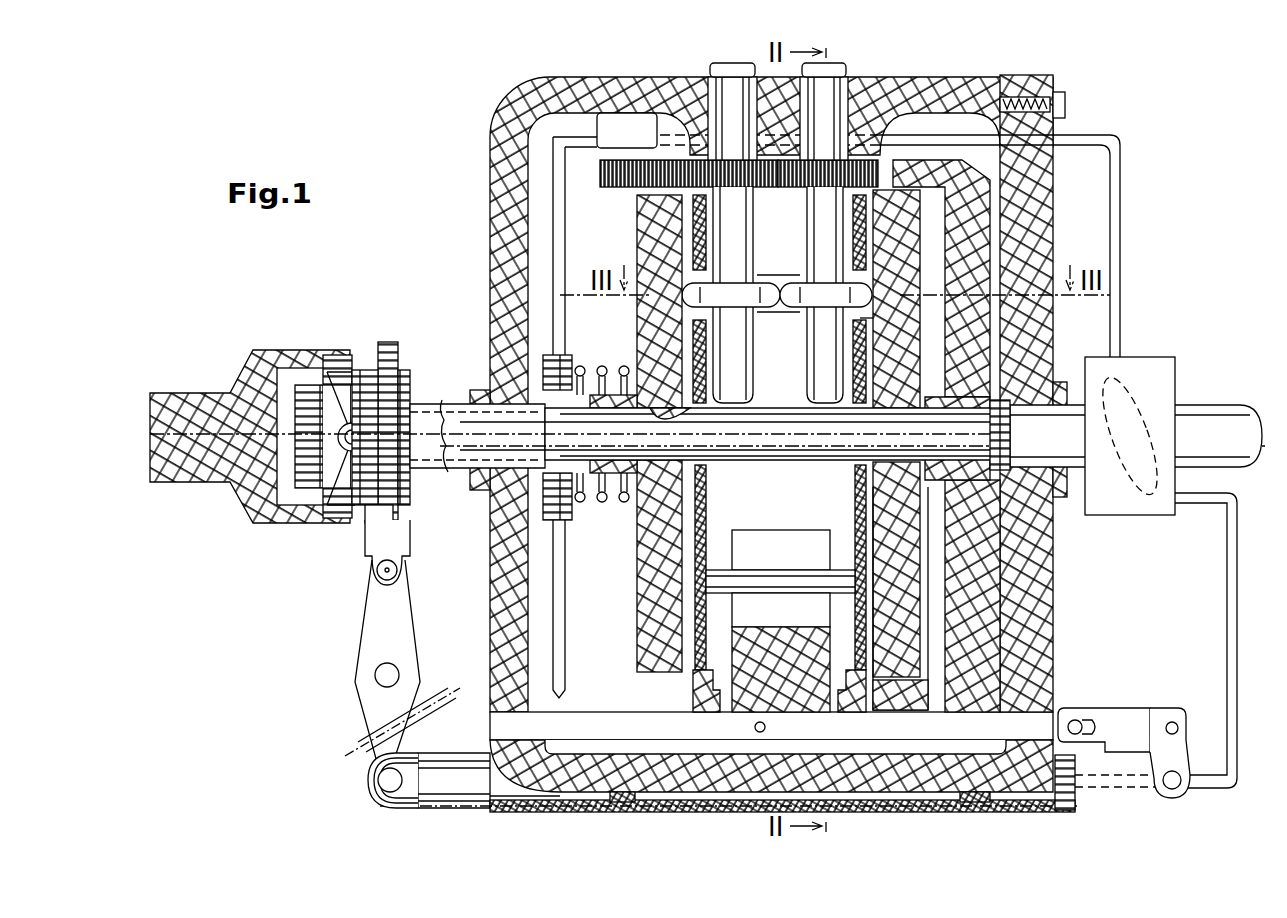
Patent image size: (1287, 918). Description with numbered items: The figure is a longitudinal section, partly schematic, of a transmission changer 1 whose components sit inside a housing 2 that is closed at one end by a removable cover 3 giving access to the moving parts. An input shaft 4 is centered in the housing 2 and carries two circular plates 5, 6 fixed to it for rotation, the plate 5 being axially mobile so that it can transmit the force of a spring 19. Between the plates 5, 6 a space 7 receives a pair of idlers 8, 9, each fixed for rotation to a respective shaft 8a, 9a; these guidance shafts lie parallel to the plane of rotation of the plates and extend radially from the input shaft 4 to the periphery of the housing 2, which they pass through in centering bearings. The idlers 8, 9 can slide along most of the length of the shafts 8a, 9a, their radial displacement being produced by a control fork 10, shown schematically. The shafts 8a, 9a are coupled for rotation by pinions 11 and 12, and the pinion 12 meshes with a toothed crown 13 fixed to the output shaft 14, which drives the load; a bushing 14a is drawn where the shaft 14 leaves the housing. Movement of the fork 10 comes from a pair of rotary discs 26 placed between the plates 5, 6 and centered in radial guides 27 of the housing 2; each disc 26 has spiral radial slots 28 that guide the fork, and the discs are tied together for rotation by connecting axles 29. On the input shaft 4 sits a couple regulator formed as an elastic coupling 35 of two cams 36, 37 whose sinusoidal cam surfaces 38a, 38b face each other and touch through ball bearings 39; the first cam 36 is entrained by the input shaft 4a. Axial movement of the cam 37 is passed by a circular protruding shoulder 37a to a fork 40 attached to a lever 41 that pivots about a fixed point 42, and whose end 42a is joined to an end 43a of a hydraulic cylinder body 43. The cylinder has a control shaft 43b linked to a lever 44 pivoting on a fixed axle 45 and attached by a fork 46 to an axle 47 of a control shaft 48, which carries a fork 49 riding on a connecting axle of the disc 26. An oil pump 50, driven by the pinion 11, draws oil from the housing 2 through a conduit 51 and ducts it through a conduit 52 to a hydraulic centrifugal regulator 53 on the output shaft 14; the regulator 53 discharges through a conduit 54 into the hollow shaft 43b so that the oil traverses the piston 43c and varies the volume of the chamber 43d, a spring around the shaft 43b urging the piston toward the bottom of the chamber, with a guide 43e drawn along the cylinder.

The transmission changer 1 is at (1096, 587).
The housing 2 is at (490, 194).
The removable cover 3 is at (1048, 205).
The input shaft 4 is at (456, 416).
The input shaft 4a is at (186, 394).
The circular plate 5 is at (637, 576).
The circular plate 6 is at (880, 532).
The space 7 is at (782, 458).
The idler 8 is at (680, 292).
The idler shaft 8a is at (736, 327).
The idler 9 is at (818, 290).
The idler shaft 9a is at (816, 346).
The control fork 10 is at (778, 286).
The pinion 11 is at (736, 185).
The pinion 12 is at (810, 194).
The toothed crown 13 is at (884, 160).
The output shaft 14 is at (1218, 412).
The shaft bushing 14a is at (1004, 412).
The spring 19 is at (590, 500).
The rotary disc 26 is at (704, 486).
The radial guide 27 is at (690, 700).
The radial slot 28 is at (860, 318).
The connecting axle 29 is at (766, 576).
The elastic coupling 35 is at (282, 560).
The first cam 36 is at (310, 372).
The second cam 37 is at (396, 390).
The circular protruding shoulder 37a is at (392, 510).
The cam surface 38a is at (402, 372).
The cam surface 38b is at (346, 364).
The ball bearing 39 is at (364, 436).
The fork 40 is at (374, 550).
The lever 41 is at (356, 698).
The fixed pivot point 42 is at (390, 664).
The lever end 42a is at (365, 716).
The hydraulic cylinder body 43 is at (506, 810).
The cylinder body end 43a is at (378, 792).
The control shaft 43b is at (1102, 790).
The piston 43c is at (630, 804).
The chamber 43d is at (536, 800).
The rod guide 43e is at (964, 802).
The lever 44 is at (1192, 740).
The fixed axle 45 is at (1172, 722).
The fork 46 is at (1092, 712).
The axle 47 is at (1072, 720).
The control shaft 48 is at (850, 742).
The fork 49 is at (768, 644).
The oil pump 50 is at (620, 126).
The conduit 51 is at (562, 658).
The conduit 52 is at (1121, 200).
The hydraulic centrifugal regulator 53 is at (1140, 360).
The conduit 54 is at (1238, 610).